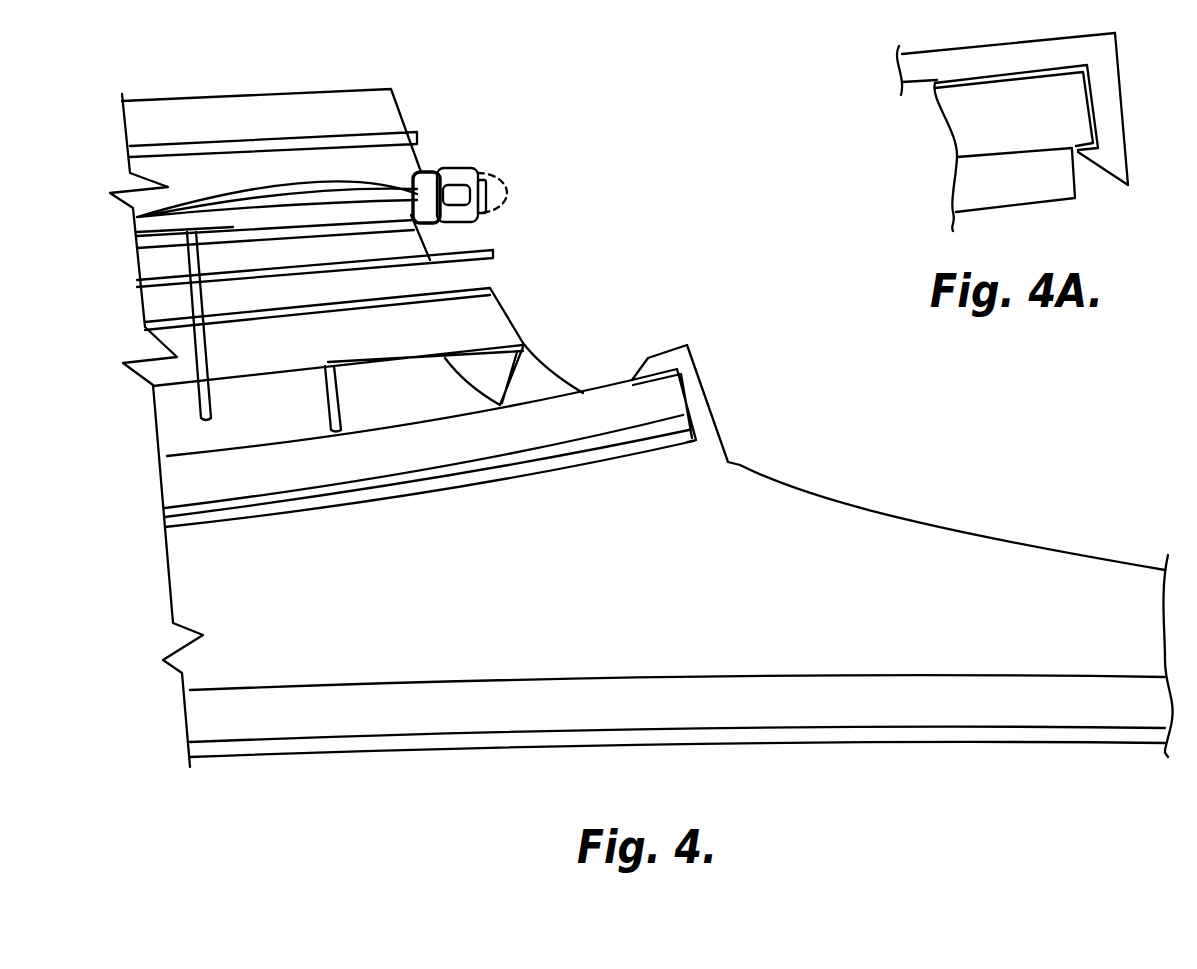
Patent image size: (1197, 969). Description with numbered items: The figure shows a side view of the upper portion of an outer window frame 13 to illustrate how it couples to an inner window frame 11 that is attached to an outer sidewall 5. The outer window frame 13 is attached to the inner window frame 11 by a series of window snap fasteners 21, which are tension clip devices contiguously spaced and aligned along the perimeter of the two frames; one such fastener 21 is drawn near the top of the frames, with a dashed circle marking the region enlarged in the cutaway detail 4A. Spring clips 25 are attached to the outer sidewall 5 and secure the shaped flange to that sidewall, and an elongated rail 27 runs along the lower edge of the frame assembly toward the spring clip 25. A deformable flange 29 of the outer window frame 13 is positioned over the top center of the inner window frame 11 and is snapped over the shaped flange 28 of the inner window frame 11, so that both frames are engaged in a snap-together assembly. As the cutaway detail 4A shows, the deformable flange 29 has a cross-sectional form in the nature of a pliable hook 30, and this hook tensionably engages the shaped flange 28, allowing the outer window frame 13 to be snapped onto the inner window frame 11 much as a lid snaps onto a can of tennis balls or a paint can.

In FIG. 4, the outer sidewall 5 is at (898, 542).
In FIG. 4, the inner window frame 11 is at (480, 328).
In FIG. 4A, the inner window frame 11 is at (1020, 203).
In FIG. 4, the outer window frame 13 is at (403, 162).
In FIG. 4, the window snap fasteners 21 is at (459, 176).
In FIG. 4, the spring clips 25 is at (700, 407).
In FIG. 4, the rail 27 is at (625, 402).
In FIG. 4A, the shaped flange 28 is at (1042, 138).
In FIG. 4, the deformable flange 29 is at (419, 223).
In FIG. 4A, the deformable flange 29 is at (1002, 58).
In FIG. 4A, the pliable hook 30 is at (1118, 159).
In FIG. 4, the cutaway view 4A is at (505, 183).